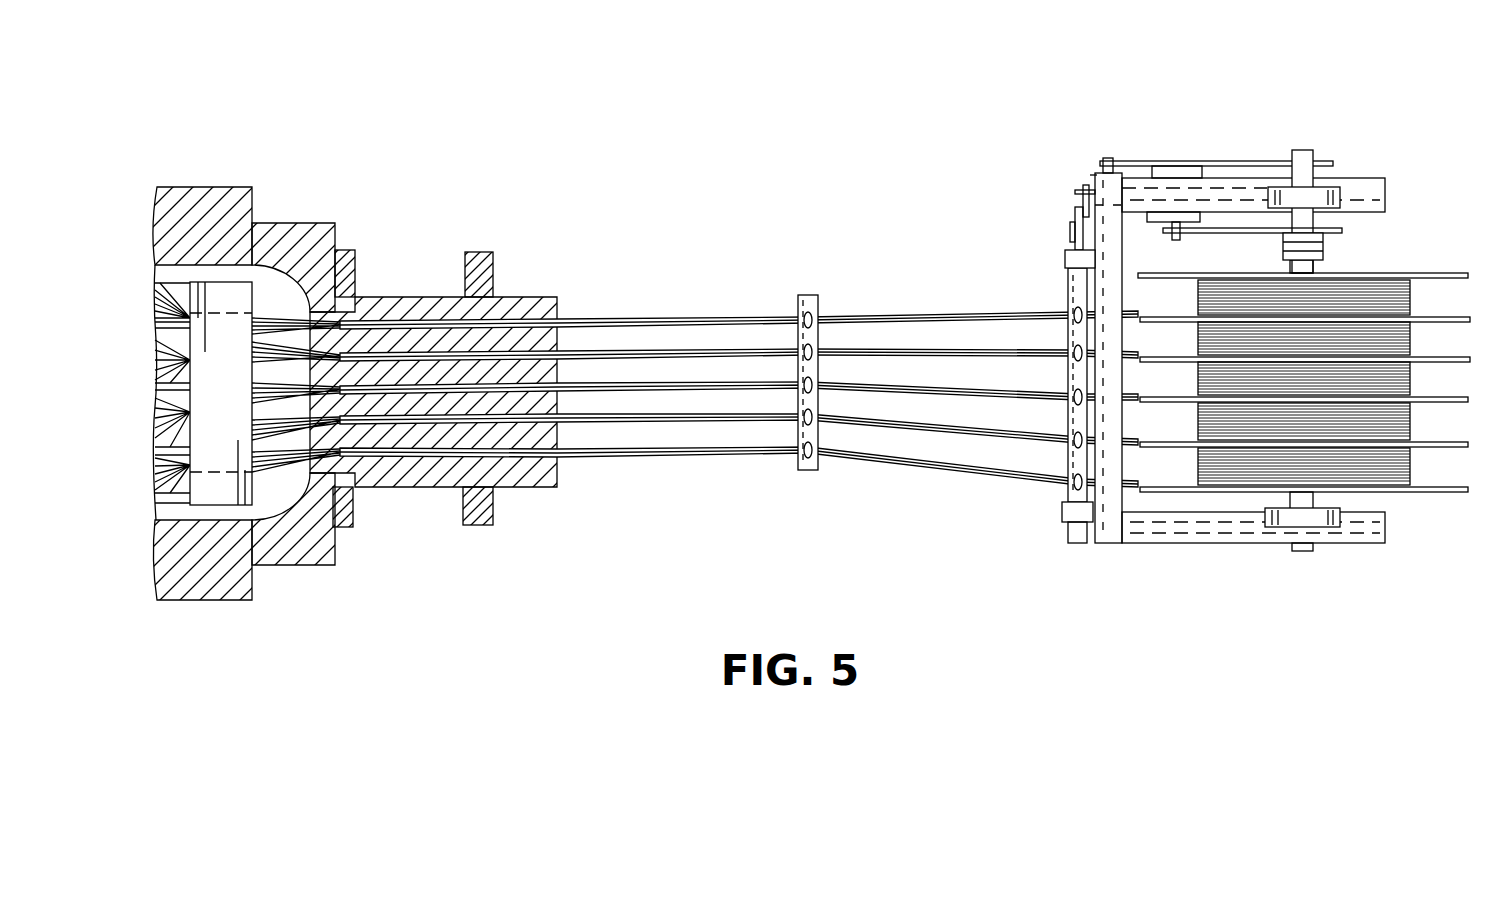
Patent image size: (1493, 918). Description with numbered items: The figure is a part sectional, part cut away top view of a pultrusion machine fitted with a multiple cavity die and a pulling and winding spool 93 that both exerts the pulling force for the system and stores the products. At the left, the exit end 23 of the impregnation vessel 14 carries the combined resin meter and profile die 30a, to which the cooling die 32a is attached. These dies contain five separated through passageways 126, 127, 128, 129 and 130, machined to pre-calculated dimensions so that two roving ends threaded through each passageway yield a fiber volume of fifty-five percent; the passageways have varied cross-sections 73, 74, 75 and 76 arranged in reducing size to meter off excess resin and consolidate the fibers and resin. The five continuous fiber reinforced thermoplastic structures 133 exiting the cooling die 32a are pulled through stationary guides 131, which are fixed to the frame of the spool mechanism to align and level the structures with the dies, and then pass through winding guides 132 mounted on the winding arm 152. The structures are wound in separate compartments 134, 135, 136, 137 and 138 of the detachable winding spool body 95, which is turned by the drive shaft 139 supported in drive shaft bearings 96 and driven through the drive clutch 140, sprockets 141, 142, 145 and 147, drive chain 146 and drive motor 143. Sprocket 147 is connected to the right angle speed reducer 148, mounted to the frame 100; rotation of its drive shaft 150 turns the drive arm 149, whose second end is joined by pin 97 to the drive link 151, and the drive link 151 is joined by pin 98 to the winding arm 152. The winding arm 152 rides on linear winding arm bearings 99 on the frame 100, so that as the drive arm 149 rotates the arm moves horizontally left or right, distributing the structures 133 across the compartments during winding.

The impregnation vessel 14 is at (206, 187).
The exit end 23 is at (306, 223).
The combined resin meter and profile die 30a is at (372, 300).
The cooling die 32a is at (525, 297).
The through passageway 126 is at (400, 318).
The through passageway 127 is at (427, 350).
The through passageway 128 is at (398, 390).
The through passageway 129 is at (425, 420).
The through passageway 130 is at (443, 453).
The varied size cross-section 73 is at (325, 462).
The varied size cross-section 74 is at (337, 465).
The varied size cross-section 75 is at (362, 460).
The varied size cross-section 76 is at (380, 460).
The continuous fiber reinforced thermoplastic structures 133 is at (705, 320).
The stationary guides 131 is at (805, 455).
The winding guides 132 is at (1068, 490).
The winding arm 152 is at (1068, 307).
The pulling and winding spool 93 is at (1188, 552).
The winding spool body 95 is at (1430, 492).
The drive shaft bearings 96 is at (1320, 530).
The connecting pin 97 is at (1075, 215).
The connecting pin 98 is at (1062, 255).
The winding arm bearings 99 is at (1062, 272).
The frame 100 is at (1240, 543).
The compartment 134 is at (1412, 305).
The compartment 135 is at (1412, 340).
The compartment 136 is at (1412, 380).
The compartment 137 is at (1412, 422).
The compartment 138 is at (1412, 462).
The drive shaft 139 is at (1300, 150).
The drive clutch 140 is at (1325, 247).
The sprocket 141 is at (1260, 233).
The sprocket 142 is at (1180, 240).
The drive motor 143 is at (1200, 161).
The sprocket 145 is at (1285, 187).
The drive chain 146 is at (1145, 178).
The sprocket 147 is at (1108, 158).
The speed reducer 148 is at (1095, 178).
The drive arm 149 is at (1083, 200).
The drive shaft of speed reducer 150 is at (1080, 190).
The drive link 151 is at (1070, 232).